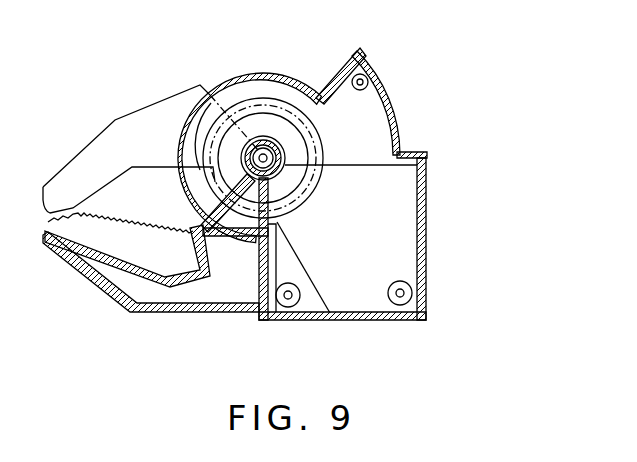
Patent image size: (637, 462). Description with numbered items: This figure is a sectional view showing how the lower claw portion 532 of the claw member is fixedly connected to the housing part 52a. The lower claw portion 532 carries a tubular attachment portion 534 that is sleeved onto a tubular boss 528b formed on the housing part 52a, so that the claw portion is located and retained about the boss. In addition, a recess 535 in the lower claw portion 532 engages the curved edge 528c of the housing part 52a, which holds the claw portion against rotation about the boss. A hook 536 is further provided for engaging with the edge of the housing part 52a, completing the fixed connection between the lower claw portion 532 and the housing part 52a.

The tubular boss 528b is at (255, 138).
The tubular attachment portion 534 is at (270, 140).
The curved edge 528c is at (203, 207).
The recess 535 is at (217, 223).
The lower claw portion 532 is at (184, 297).
The hook 536 is at (330, 313).
The housing part 52a is at (372, 292).